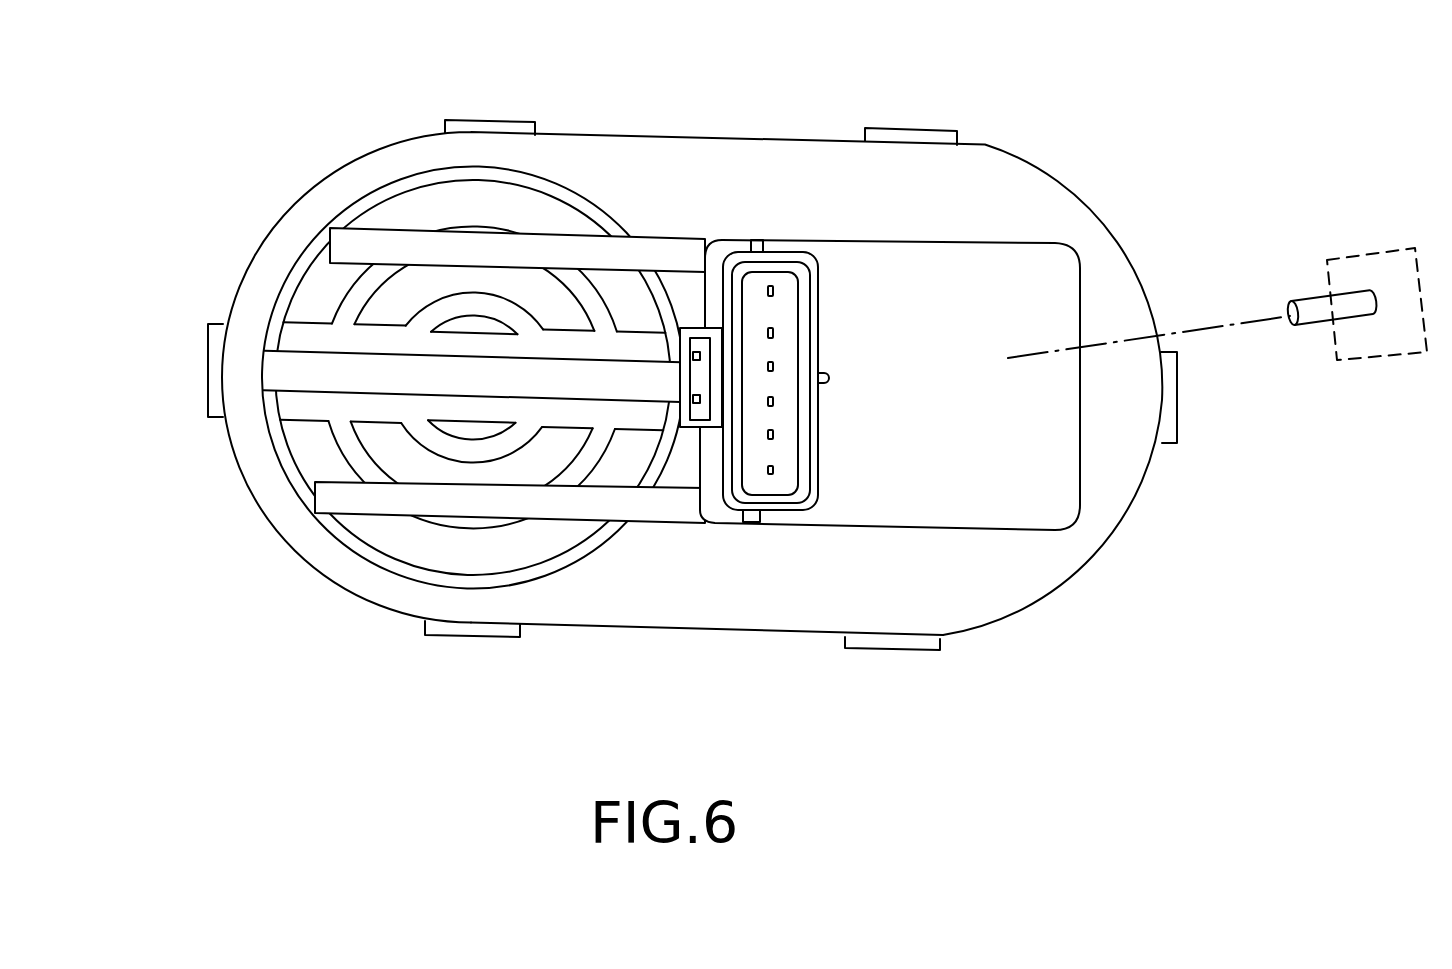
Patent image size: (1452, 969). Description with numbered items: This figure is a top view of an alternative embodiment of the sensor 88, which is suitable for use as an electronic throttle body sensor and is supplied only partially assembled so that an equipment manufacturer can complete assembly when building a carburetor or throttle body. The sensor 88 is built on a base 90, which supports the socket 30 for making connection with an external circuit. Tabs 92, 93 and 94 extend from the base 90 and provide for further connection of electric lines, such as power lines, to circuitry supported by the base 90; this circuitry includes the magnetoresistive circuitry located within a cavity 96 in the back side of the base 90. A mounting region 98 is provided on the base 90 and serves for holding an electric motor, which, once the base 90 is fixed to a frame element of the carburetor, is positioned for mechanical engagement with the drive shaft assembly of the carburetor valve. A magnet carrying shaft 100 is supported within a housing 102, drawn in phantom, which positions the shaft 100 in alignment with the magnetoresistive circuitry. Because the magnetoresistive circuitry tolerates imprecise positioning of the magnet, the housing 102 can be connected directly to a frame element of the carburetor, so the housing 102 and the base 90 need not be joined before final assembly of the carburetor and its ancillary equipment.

The socket 30 is at (792, 513).
The sensor 88 is at (635, 99).
The base 90 is at (663, 630).
The tab 92 is at (898, 128).
The tab 93 is at (207, 371).
The tab 94 is at (476, 126).
The cavity 96 is at (1062, 503).
The mounting region 98 is at (383, 563).
The magnet carrying shaft 100 is at (1318, 326).
The housing 102 is at (1350, 253).